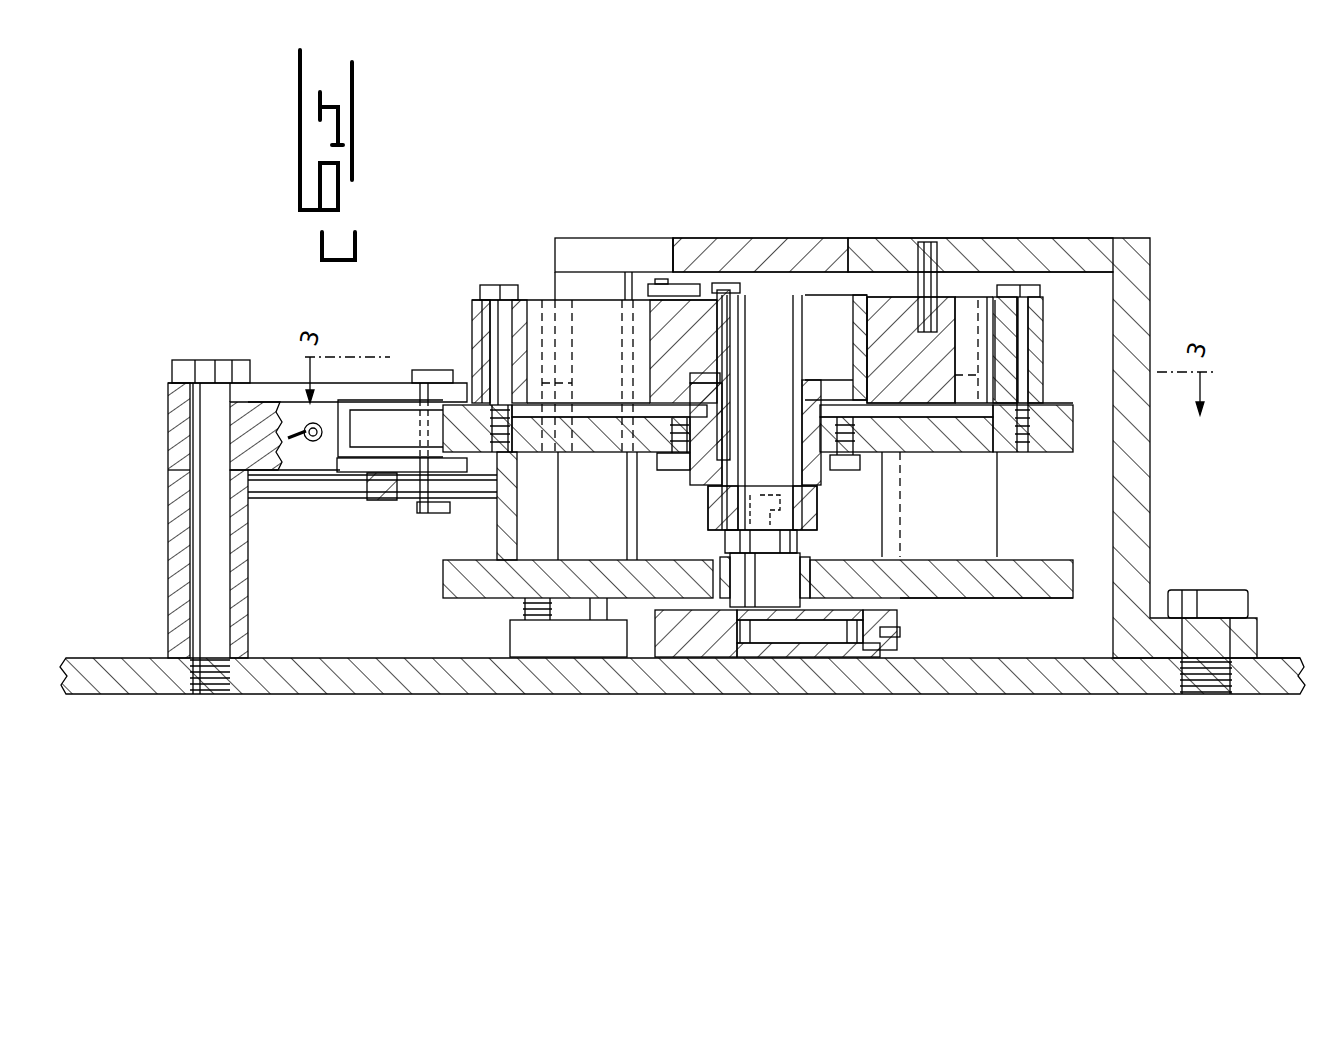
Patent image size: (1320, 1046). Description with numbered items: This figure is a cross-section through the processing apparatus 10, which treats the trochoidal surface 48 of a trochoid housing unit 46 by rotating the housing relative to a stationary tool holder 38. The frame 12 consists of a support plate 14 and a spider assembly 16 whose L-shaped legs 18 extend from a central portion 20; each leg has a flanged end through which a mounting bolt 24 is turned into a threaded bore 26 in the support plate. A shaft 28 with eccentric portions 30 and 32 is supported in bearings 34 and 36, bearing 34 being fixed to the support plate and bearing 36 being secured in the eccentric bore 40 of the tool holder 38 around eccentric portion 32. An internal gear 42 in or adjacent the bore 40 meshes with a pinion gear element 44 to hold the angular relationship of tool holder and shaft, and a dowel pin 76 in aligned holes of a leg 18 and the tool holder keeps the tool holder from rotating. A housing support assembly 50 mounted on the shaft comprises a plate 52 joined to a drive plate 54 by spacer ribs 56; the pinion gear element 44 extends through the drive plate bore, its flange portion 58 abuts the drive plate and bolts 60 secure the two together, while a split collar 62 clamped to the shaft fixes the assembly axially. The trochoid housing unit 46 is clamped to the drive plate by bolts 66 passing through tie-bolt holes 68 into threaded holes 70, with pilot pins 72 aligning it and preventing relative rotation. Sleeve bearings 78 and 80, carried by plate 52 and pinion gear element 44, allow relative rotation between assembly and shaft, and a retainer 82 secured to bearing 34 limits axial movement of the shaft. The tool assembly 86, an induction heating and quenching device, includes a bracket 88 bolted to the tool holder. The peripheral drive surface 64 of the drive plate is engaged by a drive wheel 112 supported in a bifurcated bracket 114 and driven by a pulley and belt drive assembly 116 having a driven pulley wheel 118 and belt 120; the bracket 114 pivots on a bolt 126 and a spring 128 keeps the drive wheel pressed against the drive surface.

The processing apparatus 10 is at (1167, 225).
The frame 12 is at (1262, 695).
The support plate 14 is at (1278, 660).
The spider assembly 16 is at (1078, 232).
The L-shaped legs 18 is at (600, 240).
The central portion 20 is at (757, 240).
The mounting bolt 24 is at (522, 614).
The threaded bore 26 is at (1215, 697).
The shaft 28 is at (745, 428).
The eccentric portion 30 is at (840, 660).
The eccentric portion 32 is at (815, 300).
The bearing 34 is at (680, 660).
The bearing 36 is at (880, 295).
The tool holder 38 is at (918, 290).
The eccentric bore 40 is at (911, 350).
The internal gear 42 is at (857, 370).
The pinion gear element 44 is at (830, 377).
The trochoid housing unit 46 is at (1045, 358).
The trochoidal surface 48 is at (990, 300).
The housing support assembly 50 is at (1060, 552).
The plate 52 is at (1030, 600).
The drive plate 54 is at (1073, 395).
The spacer ribs 56 is at (520, 495).
The flange portion 58 is at (880, 470).
The bolts 60 is at (838, 470).
The split collar 62 is at (820, 505).
The drive surface 64 is at (440, 410).
The bolts 66 is at (490, 295).
The tie-bolt holes 68 is at (490, 340).
The threaded holes 70 is at (1060, 420).
The pilot pins 72 is at (587, 410).
The dowel pin 76 is at (975, 295).
The sleeve bearing 78 is at (800, 580).
The sleeve bearing 80 is at (793, 467).
The retainer 82 is at (900, 632).
The tool assembly 86 is at (712, 280).
The bracket 88 is at (680, 285).
The drive wheel 112 is at (383, 417).
The bifurcated bracket 114 is at (273, 393).
The pulley and belt drive assembly 116 is at (386, 502).
The driven pulley wheel 118 is at (445, 503).
The belt 120 is at (270, 490).
The bolt 126 is at (200, 493).
The spring 128 is at (320, 445).